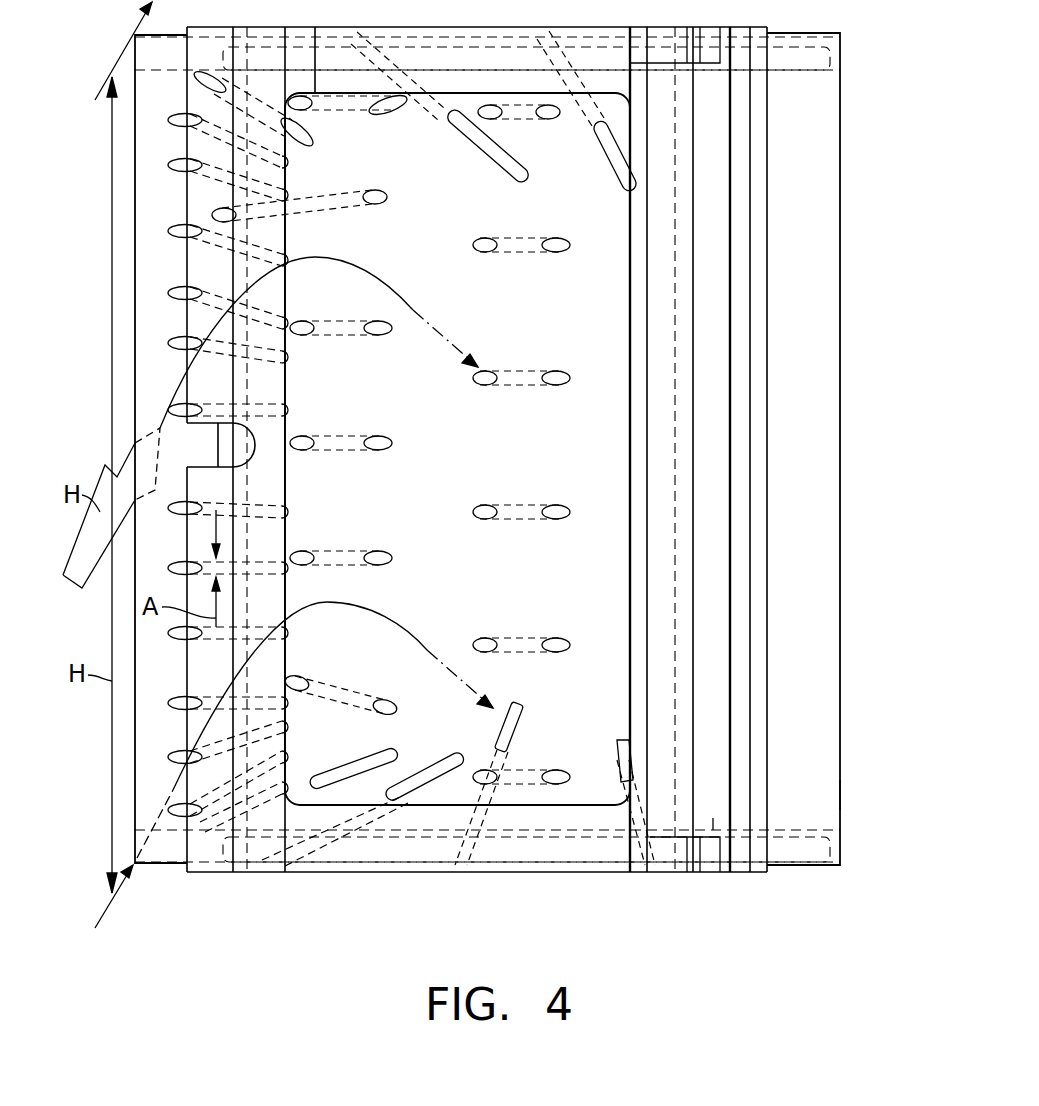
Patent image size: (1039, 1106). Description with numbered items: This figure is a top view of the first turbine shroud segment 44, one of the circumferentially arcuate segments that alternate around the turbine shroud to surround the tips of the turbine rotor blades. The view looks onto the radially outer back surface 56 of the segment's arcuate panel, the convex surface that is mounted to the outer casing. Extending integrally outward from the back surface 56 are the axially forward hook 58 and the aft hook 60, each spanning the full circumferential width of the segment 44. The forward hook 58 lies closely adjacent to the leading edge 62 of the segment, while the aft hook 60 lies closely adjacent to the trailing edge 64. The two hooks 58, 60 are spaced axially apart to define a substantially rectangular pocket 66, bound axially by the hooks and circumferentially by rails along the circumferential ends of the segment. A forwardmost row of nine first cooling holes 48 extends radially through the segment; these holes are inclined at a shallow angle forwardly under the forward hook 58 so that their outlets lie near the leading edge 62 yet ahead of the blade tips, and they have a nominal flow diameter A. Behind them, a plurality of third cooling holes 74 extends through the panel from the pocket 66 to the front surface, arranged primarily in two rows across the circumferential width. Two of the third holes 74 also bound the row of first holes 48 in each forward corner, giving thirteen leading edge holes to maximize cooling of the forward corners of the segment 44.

The first turbine shroud segment 44 is at (324, 876).
The first cooling holes 48 is at (203, 292).
The back surface 56 is at (822, 137).
The forward hook 58 is at (205, 848).
The aft hook 60 is at (713, 818).
The leading edge 62 is at (135, 752).
The trailing edge 64 is at (840, 793).
The pocket 66 is at (550, 455).
The third cooling holes 74 is at (290, 167).